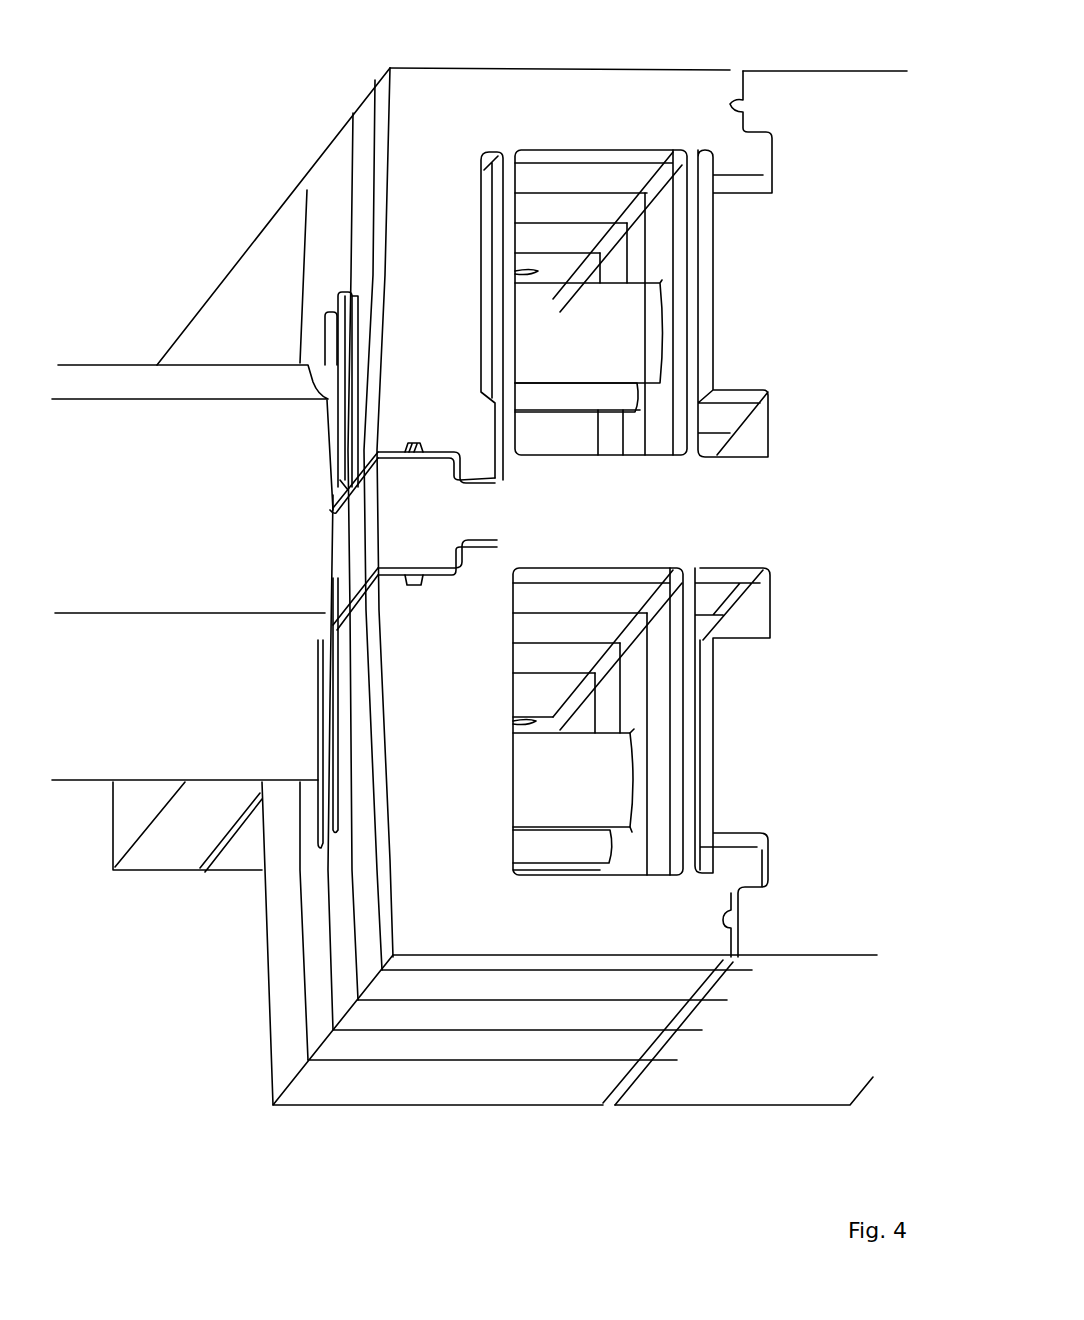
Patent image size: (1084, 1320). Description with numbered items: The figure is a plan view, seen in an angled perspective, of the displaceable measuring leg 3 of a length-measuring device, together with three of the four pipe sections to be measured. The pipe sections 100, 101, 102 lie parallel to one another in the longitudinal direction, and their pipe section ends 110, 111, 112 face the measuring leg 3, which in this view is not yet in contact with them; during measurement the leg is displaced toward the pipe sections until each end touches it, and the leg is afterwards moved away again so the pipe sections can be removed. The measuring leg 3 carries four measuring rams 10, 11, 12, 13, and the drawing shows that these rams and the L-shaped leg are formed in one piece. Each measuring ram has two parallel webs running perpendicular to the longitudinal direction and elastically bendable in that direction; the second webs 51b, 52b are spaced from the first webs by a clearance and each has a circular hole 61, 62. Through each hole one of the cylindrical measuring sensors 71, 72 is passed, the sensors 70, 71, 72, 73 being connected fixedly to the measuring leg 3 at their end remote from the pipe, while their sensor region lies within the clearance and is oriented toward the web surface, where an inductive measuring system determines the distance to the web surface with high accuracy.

The displaceable measuring leg 3 is at (146, 272).
The measuring ram 10 is at (300, 855).
The measuring ram 11 is at (345, 965).
The measuring ram 12 is at (337, 255).
The measuring ram 13 is at (430, 100).
The pipe section 100 is at (329, 359).
The pipe section 101 is at (188, 696).
The pipe section 102 is at (190, 383).
The pipe section end 110 is at (330, 512).
The pipe section end 111 is at (317, 707).
The pipe section end 112 is at (310, 380).
The second web 51b is at (688, 785).
The second web 52b is at (633, 243).
The hole 61 is at (638, 773).
The hole 62 is at (643, 404).
The measuring sensor 70 is at (590, 843).
The measuring sensor 71 is at (568, 788).
The measuring sensor 72 is at (535, 400).
The measuring sensor 73 is at (586, 325).